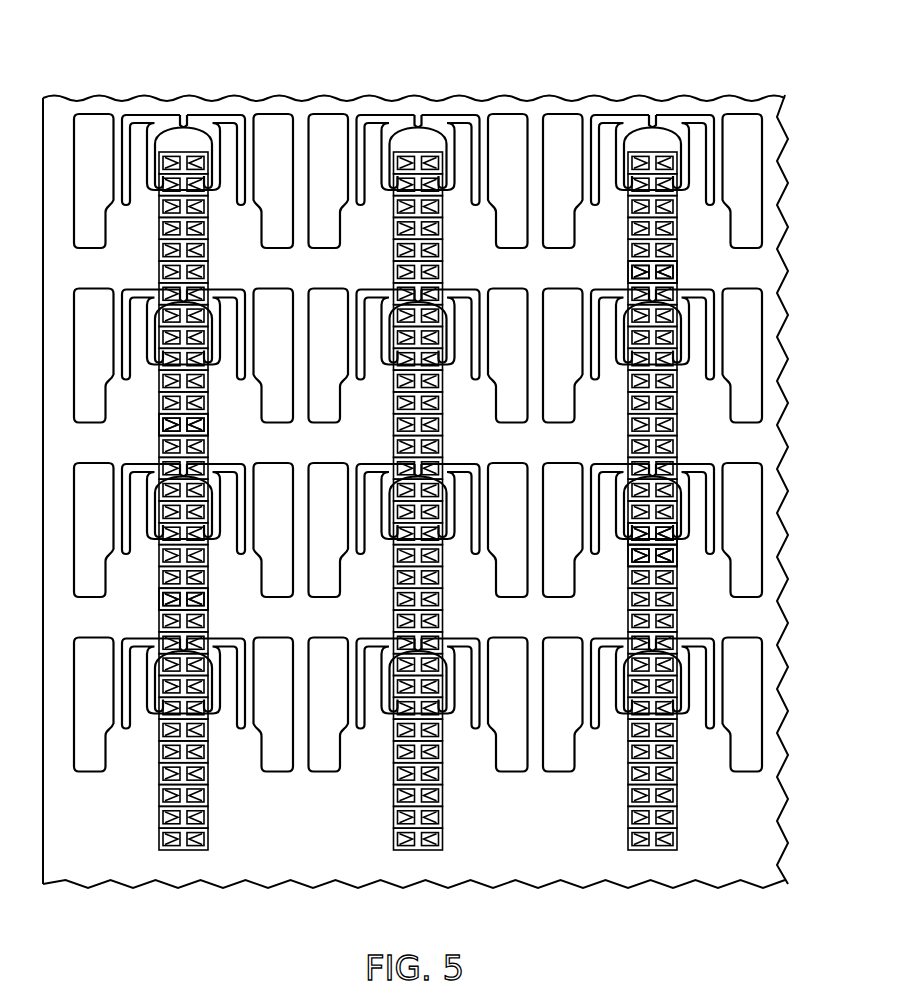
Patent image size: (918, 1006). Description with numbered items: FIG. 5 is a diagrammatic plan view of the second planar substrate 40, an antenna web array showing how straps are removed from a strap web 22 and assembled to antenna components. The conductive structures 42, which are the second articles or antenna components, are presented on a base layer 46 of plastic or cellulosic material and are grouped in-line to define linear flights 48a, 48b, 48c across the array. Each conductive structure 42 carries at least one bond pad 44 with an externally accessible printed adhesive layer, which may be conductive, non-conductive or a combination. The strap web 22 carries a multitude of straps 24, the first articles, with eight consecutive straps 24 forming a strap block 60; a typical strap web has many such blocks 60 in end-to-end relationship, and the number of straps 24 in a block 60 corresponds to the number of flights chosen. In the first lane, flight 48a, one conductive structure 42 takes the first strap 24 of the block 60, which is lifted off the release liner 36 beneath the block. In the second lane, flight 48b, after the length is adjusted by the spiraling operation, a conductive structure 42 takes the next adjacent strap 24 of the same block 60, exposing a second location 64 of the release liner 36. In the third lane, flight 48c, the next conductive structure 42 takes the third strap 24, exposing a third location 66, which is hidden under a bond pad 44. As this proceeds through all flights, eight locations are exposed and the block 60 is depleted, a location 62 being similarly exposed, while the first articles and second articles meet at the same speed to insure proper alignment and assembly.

The RFID device web 40 is at (800, 100).
The conductive structure 42 is at (441, 116).
The bond pad 44 is at (200, 157).
The base layer 46 is at (585, 237).
The strap block 60 is at (150, 175).
The strap web 22 is at (679, 261).
The strap 24 is at (158, 428).
The release liner 36 is at (158, 601).
The flight 48a is at (148, 840).
The flight 48b is at (382, 840).
The flight 48c is at (685, 840).
The strap conductive lead 62 is at (670, 553).
The second location 64 is at (642, 538).
The third location 66 is at (677, 510).